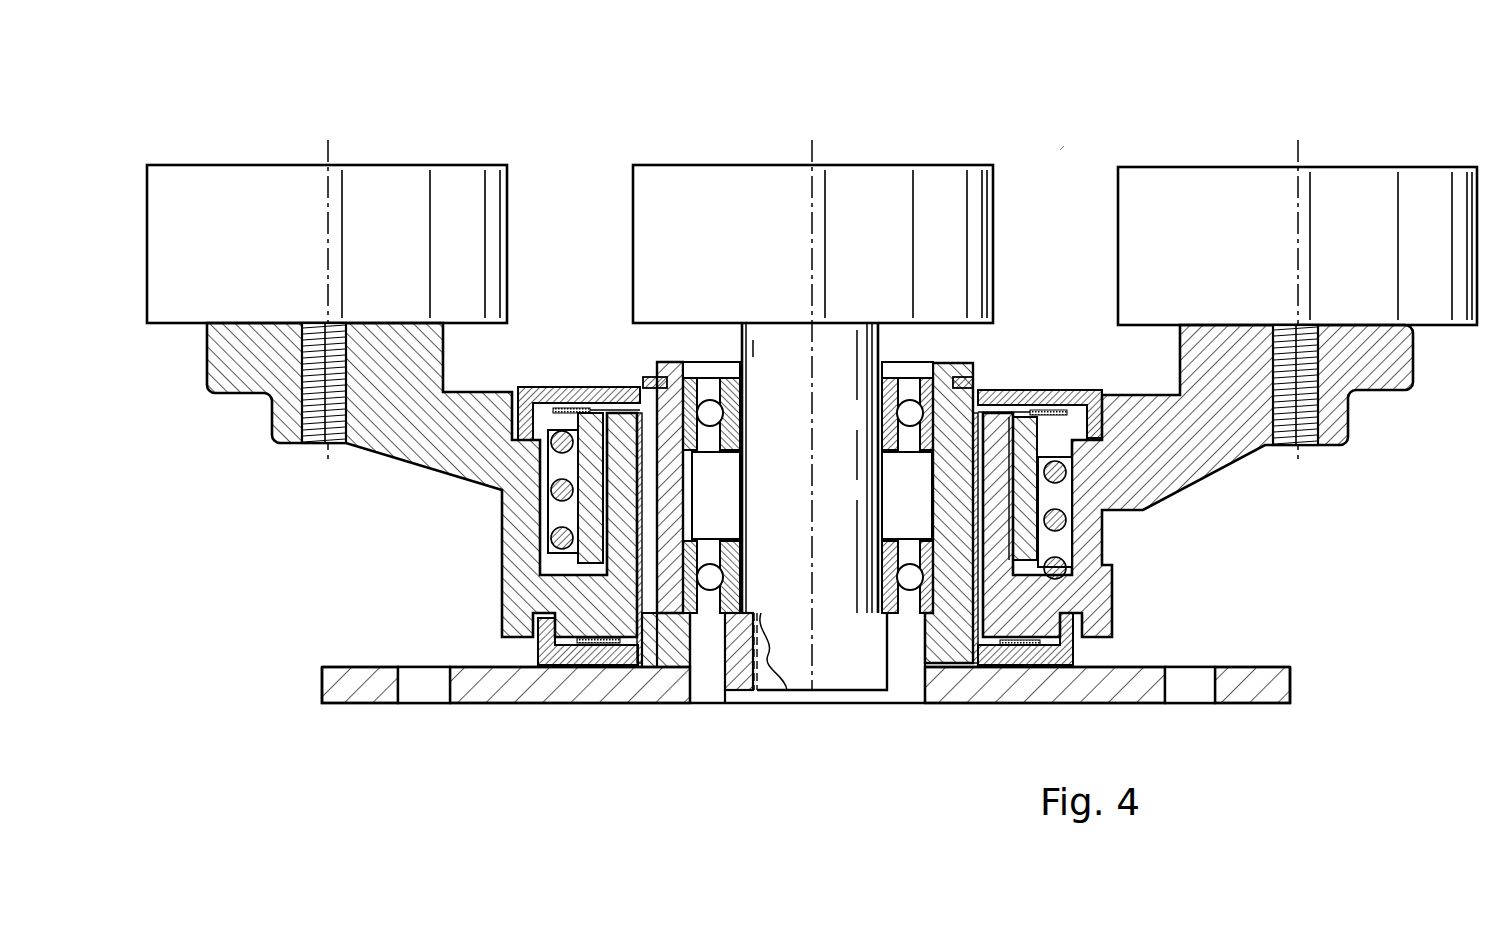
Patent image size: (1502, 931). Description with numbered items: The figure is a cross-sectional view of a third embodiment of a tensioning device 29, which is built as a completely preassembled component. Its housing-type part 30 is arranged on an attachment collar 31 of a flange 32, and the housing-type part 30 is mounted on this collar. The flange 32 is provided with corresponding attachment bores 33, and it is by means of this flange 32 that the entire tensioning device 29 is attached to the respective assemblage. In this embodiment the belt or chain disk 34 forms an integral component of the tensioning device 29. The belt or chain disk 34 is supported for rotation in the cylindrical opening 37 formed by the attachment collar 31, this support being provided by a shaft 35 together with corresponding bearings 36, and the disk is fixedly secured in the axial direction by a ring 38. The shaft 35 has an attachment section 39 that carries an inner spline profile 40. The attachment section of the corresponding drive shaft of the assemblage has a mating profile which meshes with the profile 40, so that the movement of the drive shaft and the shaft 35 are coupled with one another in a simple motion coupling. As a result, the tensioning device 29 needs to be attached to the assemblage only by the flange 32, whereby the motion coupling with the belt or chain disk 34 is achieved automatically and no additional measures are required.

The tensioning device 29 is at (1063, 147).
The housing-type part 30 is at (663, 636).
The attachment collar 31 is at (664, 409).
The flange 32 is at (614, 704).
The attachment bores 33 is at (427, 675).
The belt or chain disk 34 is at (897, 190).
The shaft 35 is at (833, 345).
The bearings 36 is at (960, 380).
The cylindrical opening 37 is at (706, 682).
The ring 38 is at (930, 375).
The attachment section 39 is at (733, 680).
The inner spline profile 40 is at (757, 675).